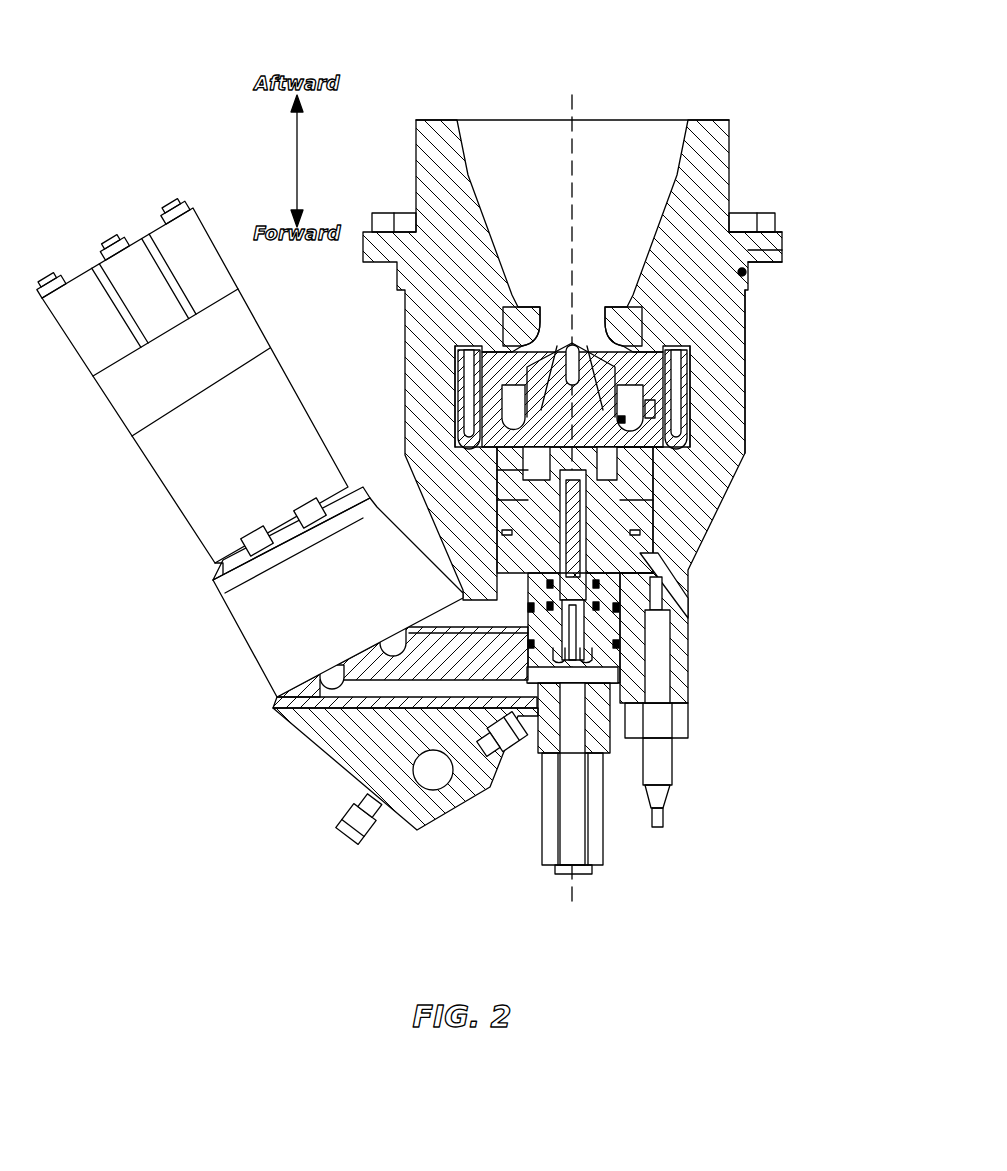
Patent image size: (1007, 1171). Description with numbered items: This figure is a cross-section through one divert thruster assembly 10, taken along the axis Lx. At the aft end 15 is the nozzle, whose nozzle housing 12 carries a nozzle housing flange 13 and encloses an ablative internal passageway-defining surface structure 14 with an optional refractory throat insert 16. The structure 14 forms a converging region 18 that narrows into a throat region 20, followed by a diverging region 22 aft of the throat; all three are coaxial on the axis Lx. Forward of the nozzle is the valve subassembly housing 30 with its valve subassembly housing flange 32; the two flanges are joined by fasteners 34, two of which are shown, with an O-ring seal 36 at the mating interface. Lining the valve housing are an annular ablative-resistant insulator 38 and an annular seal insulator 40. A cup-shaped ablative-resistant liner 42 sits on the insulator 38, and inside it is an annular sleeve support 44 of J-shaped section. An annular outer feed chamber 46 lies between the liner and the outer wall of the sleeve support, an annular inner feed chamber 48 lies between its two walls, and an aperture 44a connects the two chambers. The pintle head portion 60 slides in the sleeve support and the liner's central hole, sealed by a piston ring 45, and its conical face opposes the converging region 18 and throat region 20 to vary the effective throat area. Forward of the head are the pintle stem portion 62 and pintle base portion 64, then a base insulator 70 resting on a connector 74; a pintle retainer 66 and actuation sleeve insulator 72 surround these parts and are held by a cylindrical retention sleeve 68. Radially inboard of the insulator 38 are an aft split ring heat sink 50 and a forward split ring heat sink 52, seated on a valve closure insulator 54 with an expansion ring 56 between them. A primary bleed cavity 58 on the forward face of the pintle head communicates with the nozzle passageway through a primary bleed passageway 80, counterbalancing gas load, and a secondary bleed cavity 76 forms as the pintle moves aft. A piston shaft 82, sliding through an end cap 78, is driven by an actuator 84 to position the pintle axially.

The thruster assembly 10 is at (224, 101).
The nozzle housing 12 is at (576, 369).
The nozzle housing flange 13 is at (786, 232).
The internal passageway-defining surface structure 14 is at (432, 125).
The aft end 15 is at (700, 122).
The throat insert 16 is at (610, 320).
The converging region 18 is at (480, 325).
The throat region 20 is at (560, 330).
The diverging region 22 is at (522, 337).
The valve subassembly housing 30 is at (746, 322).
The valve subassembly housing flange 32 is at (782, 258).
The fasteners 34 is at (383, 222).
The O-ring seal 36 is at (744, 270).
The annular ablative-resistant insulator 38 is at (650, 563).
The annular seal insulator 40 is at (680, 368).
The ablative-resistant liner 42 is at (405, 345).
The annular sleeve support 44 is at (420, 372).
The aperture 44a is at (430, 390).
The piston ring 45 is at (625, 422).
The annular outer feed chamber 46 is at (645, 380).
The annular inner feed chamber 48 is at (678, 396).
The aft split ring heat sink 50 is at (625, 500).
The forward split ring heat sink 52 is at (610, 520).
The valve closure insulator 54 is at (655, 600).
The expansion ring 56 is at (640, 580).
The primary bleed cavity 58 is at (625, 447).
The pintle head portion 60 is at (650, 408).
The pintle stem portion 62 is at (602, 460).
The pintle base portion 64 is at (530, 440).
The pintle retainer 66 is at (515, 450).
The cylindrical retention sleeve 68 is at (612, 482).
The base insulator 70 is at (505, 470).
The actuation sleeve insulator 72 is at (660, 542).
The connector 74 is at (500, 530).
The secondary bleed cavity 76 is at (495, 540).
The end cap 78 is at (662, 620).
The primary bleed passageway 80 is at (585, 330).
The piston shaft 82 is at (610, 660).
The actuator 84 is at (120, 405).
The axis Lx is at (572, 100).